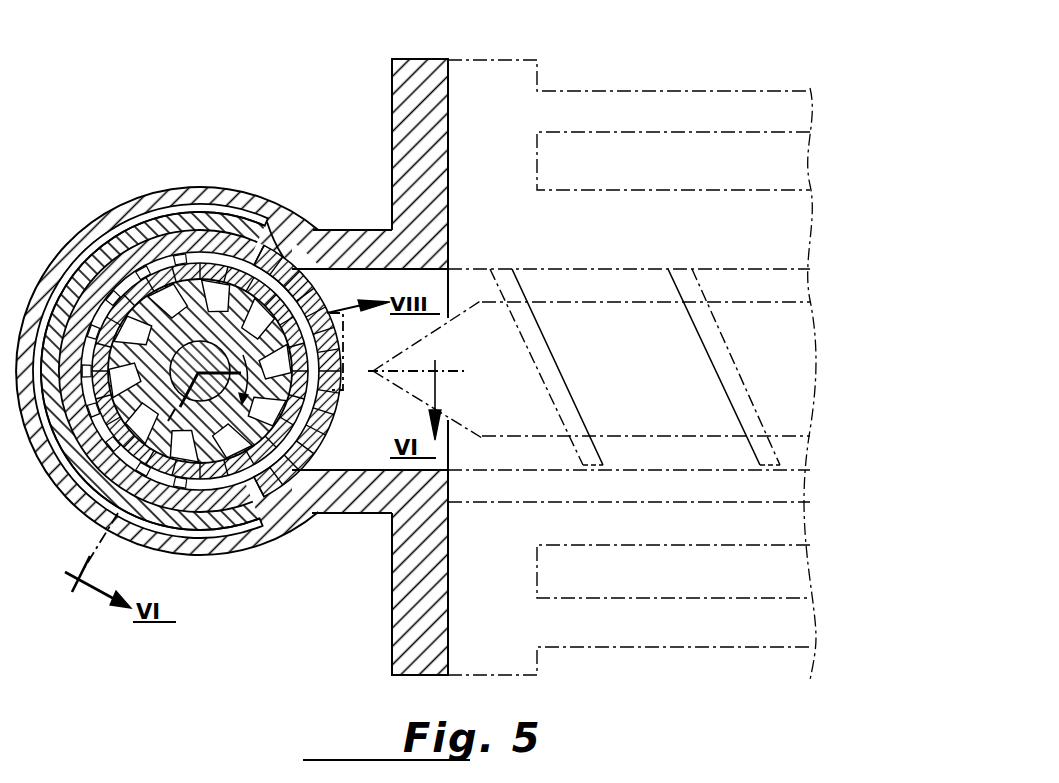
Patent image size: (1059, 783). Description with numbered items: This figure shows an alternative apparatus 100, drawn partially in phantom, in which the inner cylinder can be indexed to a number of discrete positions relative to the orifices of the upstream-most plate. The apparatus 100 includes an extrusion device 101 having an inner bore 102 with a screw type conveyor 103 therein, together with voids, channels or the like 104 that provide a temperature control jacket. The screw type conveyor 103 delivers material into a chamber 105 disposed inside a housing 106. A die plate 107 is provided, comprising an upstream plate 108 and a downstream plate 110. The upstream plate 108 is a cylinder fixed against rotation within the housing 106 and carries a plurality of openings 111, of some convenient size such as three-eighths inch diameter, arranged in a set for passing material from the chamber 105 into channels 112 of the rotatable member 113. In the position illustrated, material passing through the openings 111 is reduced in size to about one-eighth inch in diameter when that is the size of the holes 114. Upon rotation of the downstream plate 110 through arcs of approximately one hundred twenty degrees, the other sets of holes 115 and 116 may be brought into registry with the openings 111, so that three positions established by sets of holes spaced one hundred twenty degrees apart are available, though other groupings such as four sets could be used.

The apparatus 100 is at (448, 47).
The extrusion device 101 is at (512, 80).
The inner bore 102 is at (562, 266).
The screw type conveyor 103 is at (627, 298).
The voids, channels or the like 104 is at (630, 140).
The chamber 105 is at (408, 341).
The housing 106 is at (392, 136).
The die plate 107 is at (293, 252).
The upstream plate 108 is at (332, 268).
The downstream plate 110 is at (277, 453).
The openings 111 is at (297, 304).
The channels 112 is at (252, 445).
The rotatable member 113 is at (160, 415).
The holes 114 is at (323, 392).
The set of holes 115 is at (150, 447).
The set of holes 116 is at (126, 295).